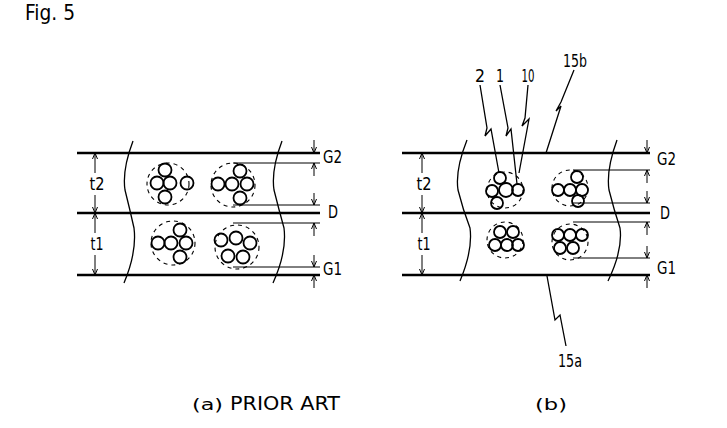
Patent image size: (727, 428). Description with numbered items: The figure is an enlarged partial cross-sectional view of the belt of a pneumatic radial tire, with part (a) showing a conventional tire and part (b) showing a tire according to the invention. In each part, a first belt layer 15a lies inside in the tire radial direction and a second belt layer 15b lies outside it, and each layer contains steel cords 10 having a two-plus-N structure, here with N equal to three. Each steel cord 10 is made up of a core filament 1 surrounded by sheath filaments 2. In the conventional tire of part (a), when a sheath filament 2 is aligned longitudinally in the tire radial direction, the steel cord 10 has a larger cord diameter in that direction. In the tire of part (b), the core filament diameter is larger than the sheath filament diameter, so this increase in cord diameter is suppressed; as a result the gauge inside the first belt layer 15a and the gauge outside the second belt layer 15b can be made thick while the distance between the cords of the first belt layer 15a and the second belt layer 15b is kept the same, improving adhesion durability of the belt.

The core filament 1 is at (179, 126).
The sheath filament 2 is at (157, 119).
The steel cord 10 is at (203, 165).
The first belt layer 15a is at (198, 323).
The second belt layer 15b is at (198, 102).